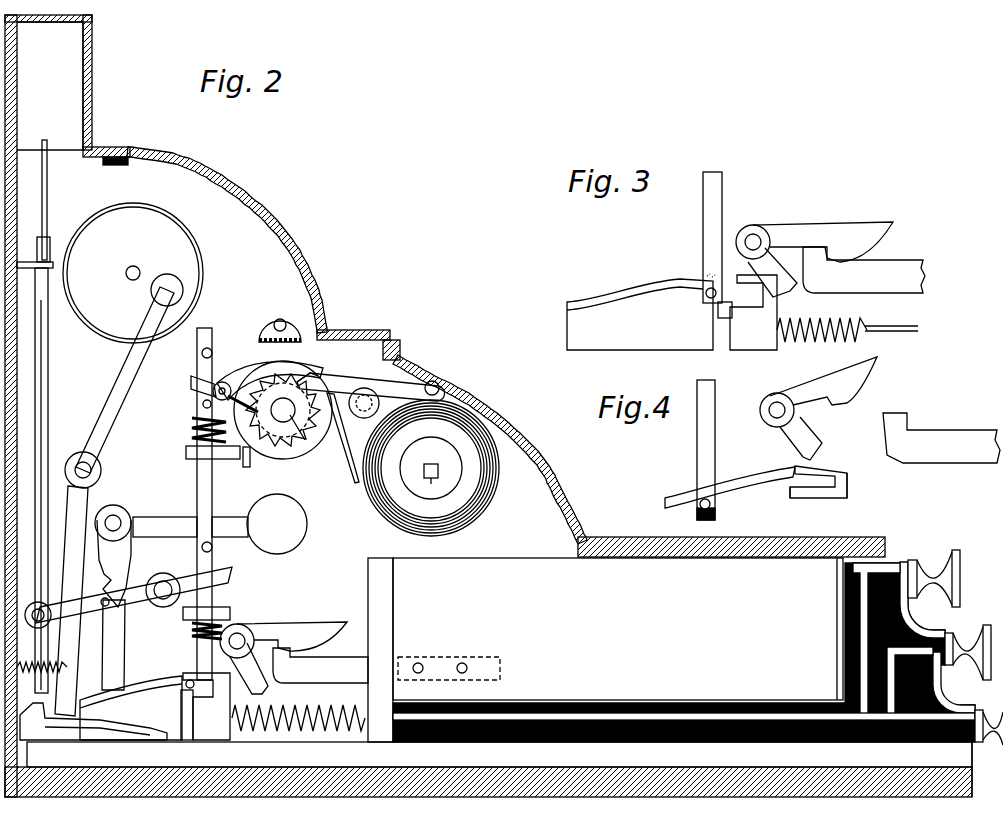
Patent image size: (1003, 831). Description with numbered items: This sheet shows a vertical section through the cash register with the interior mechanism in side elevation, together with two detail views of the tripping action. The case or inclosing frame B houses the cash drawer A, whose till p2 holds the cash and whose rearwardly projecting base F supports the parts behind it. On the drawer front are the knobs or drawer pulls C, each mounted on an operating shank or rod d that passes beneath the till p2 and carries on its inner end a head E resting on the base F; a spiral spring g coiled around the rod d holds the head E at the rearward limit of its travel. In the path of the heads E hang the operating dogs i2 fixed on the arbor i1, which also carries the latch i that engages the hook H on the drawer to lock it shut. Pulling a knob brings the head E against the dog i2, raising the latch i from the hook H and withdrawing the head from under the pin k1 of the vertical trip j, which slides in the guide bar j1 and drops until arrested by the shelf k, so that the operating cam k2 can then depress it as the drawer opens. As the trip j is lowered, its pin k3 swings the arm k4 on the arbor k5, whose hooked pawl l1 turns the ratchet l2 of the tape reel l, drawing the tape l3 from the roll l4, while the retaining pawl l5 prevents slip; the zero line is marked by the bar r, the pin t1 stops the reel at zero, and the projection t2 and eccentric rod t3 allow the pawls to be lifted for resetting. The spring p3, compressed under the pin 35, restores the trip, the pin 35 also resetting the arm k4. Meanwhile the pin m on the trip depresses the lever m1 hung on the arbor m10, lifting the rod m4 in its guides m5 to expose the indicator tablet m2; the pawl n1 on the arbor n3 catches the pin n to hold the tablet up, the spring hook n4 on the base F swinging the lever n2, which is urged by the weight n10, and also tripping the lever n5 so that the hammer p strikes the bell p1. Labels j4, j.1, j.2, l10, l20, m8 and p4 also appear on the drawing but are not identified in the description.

In FIG. 2, the case B is at (488, 406).
In FIG. 2, the cash drawer A is at (548, 560).
In FIG. 2, the base F is at (499, 755).
In FIG. 2, the head E is at (206, 706).
In FIG. 3, the head E is at (753, 312).
In FIG. 4, the head E is at (833, 501).
In FIG. 2, the hook H is at (320, 665).
In FIG. 3, the hook H is at (864, 270).
In FIG. 4, the hook H is at (941, 438).
In FIG. 2, the drawer pulls C is at (955, 647).
In FIG. 2, the operating rod d is at (858, 691).
In FIG. 3, the operating rod d is at (901, 328).
In FIG. 2, the spiral spring g is at (298, 727).
In FIG. 3, the spiral spring g is at (822, 339).
In FIG. 2, the latch i is at (292, 636).
In FIG. 3, the latch i is at (823, 242).
In FIG. 4, the latch i is at (823, 381).
In FIG. 4, the arbor i1 is at (770, 409).
In FIG. 2, the operating dog i2 is at (244, 659).
In FIG. 3, the operating dog i2 is at (766, 261).
In FIG. 4, the operating dog i2 is at (791, 426).
In FIG. 2, the trip j is at (204, 504).
In FIG. 3, the trip j is at (712, 237).
In FIG. 4, the trip j is at (706, 450).
In FIG. 2, the guide bar j1 is at (186, 455).
In FIG. 2, the cross piece j4 is at (197, 622).
In FIG. 2, the spring end j.1 is at (428, 464).
In FIG. 2, the spring end j.2 is at (436, 487).
In FIG. 2, the shelf k is at (180, 704).
In FIG. 3, the shelf k is at (724, 322).
In FIG. 4, the shelf k is at (790, 495).
In FIG. 2, the pin k1 is at (187, 687).
In FIG. 3, the pin k1 is at (700, 301).
In FIG. 4, the pin k1 is at (699, 506).
In FIG. 2, the operating cam k2 is at (141, 692).
In FIG. 3, the operating cam k2 is at (640, 314).
In FIG. 2, the pin k3 is at (202, 354).
In FIG. 2, the arm k4 is at (191, 383).
In FIG. 2, the arbor k5 is at (306, 442).
In FIG. 2, the tape reel l is at (283, 410).
In FIG. 2, the hooked pawl l1 is at (253, 372).
In FIG. 2, the ratchet l2 is at (251, 430).
In FIG. 2, the tape l3 is at (354, 484).
In FIG. 2, the roll l4 is at (431, 468).
In FIG. 2, the retaining pawl l5 is at (364, 381).
In FIG. 2, the casing ledge l10 is at (352, 337).
In FIG. 2, the pivot l20 is at (446, 394).
In FIG. 2, the pin m is at (202, 548).
In FIG. 2, the lever m1 is at (177, 590).
In FIG. 2, the indicator tablet m2 is at (57, 201).
In FIG. 2, the rod m4 is at (54, 352).
In FIG. 2, the guide m5 is at (35, 477).
In FIG. 2, the casing wall m8 is at (83, 80).
In FIG. 2, the arbor m10 is at (163, 586).
In FIG. 2, the pin n is at (128, 597).
In FIG. 2, the pawl n1 is at (114, 563).
In FIG. 2, the lever n2 is at (119, 646).
In FIG. 2, the arbor n3 is at (118, 521).
In FIG. 2, the spring hook n4 is at (43, 712).
In FIG. 2, the spring actuated lever n5 is at (70, 688).
In FIG. 2, the weight n10 is at (220, 524).
In FIG. 2, the hammer p is at (129, 373).
In FIG. 2, the bell p1 is at (133, 273).
In FIG. 2, the till p2 is at (605, 650).
In FIG. 2, the spring p3 is at (192, 425).
In FIG. 2, the spring p4 is at (193, 640).
In FIG. 2, the bar r is at (300, 346).
In FIG. 2, the pin t1 is at (252, 470).
In FIG. 2, the projection t2 is at (313, 374).
In FIG. 2, the eccentric rod t3 is at (379, 404).
In FIG. 2, the pin 35 is at (203, 404).